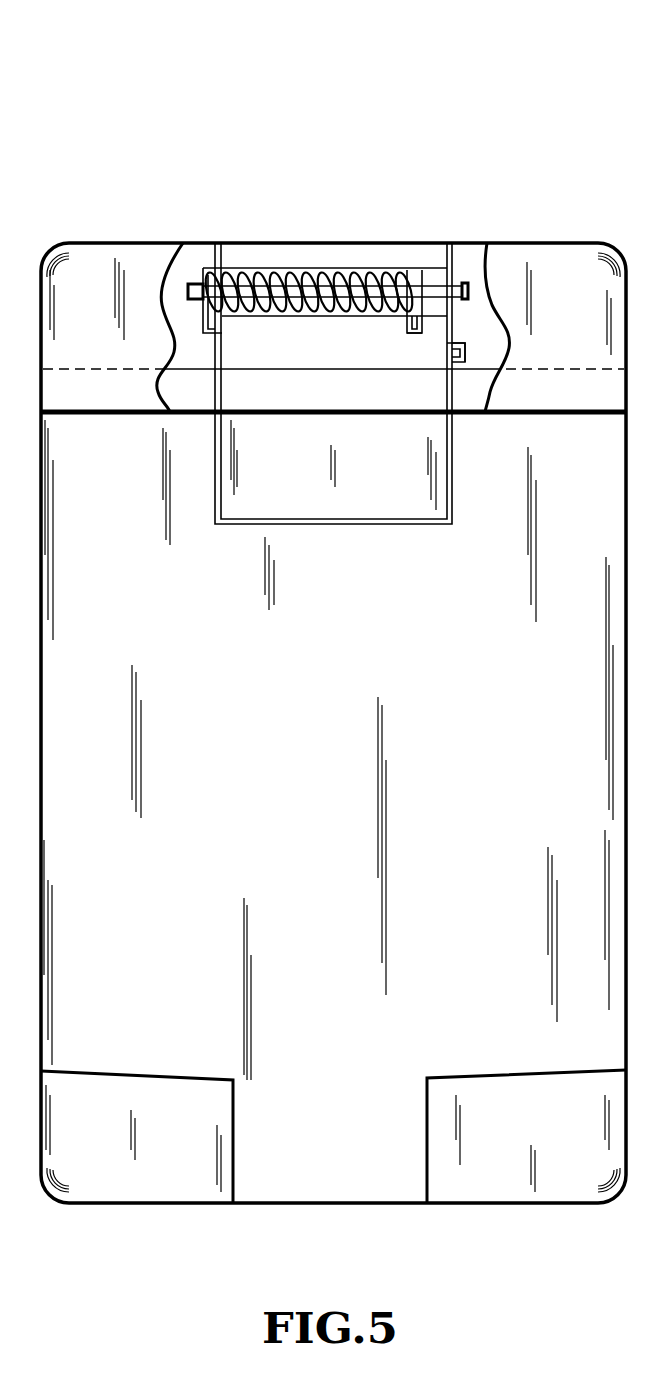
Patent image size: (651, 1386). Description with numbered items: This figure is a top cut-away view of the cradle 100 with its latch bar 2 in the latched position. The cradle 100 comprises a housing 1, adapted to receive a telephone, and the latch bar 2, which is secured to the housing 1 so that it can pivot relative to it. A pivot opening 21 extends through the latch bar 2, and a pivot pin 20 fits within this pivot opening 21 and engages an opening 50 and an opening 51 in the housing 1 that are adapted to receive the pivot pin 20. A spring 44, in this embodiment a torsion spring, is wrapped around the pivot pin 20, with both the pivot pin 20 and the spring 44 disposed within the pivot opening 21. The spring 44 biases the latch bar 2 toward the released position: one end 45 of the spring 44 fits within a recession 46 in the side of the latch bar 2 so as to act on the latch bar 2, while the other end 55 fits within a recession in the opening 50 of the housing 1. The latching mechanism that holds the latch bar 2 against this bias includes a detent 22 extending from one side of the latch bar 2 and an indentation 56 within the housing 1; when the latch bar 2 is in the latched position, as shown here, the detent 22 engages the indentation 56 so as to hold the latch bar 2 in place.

The cradle 100 is at (470, 67).
The housing 1 is at (98, 435).
The latch bar 2 is at (324, 358).
The pivot pin 20 is at (430, 292).
The pivot opening 21 is at (295, 266).
The detent 22 is at (453, 334).
The spring 44 is at (339, 266).
The end 45 is at (410, 328).
The recession 46 is at (413, 336).
The opening 50 is at (193, 281).
The opening 51 is at (458, 287).
The end 55 is at (211, 335).
The indentation 56 is at (465, 367).